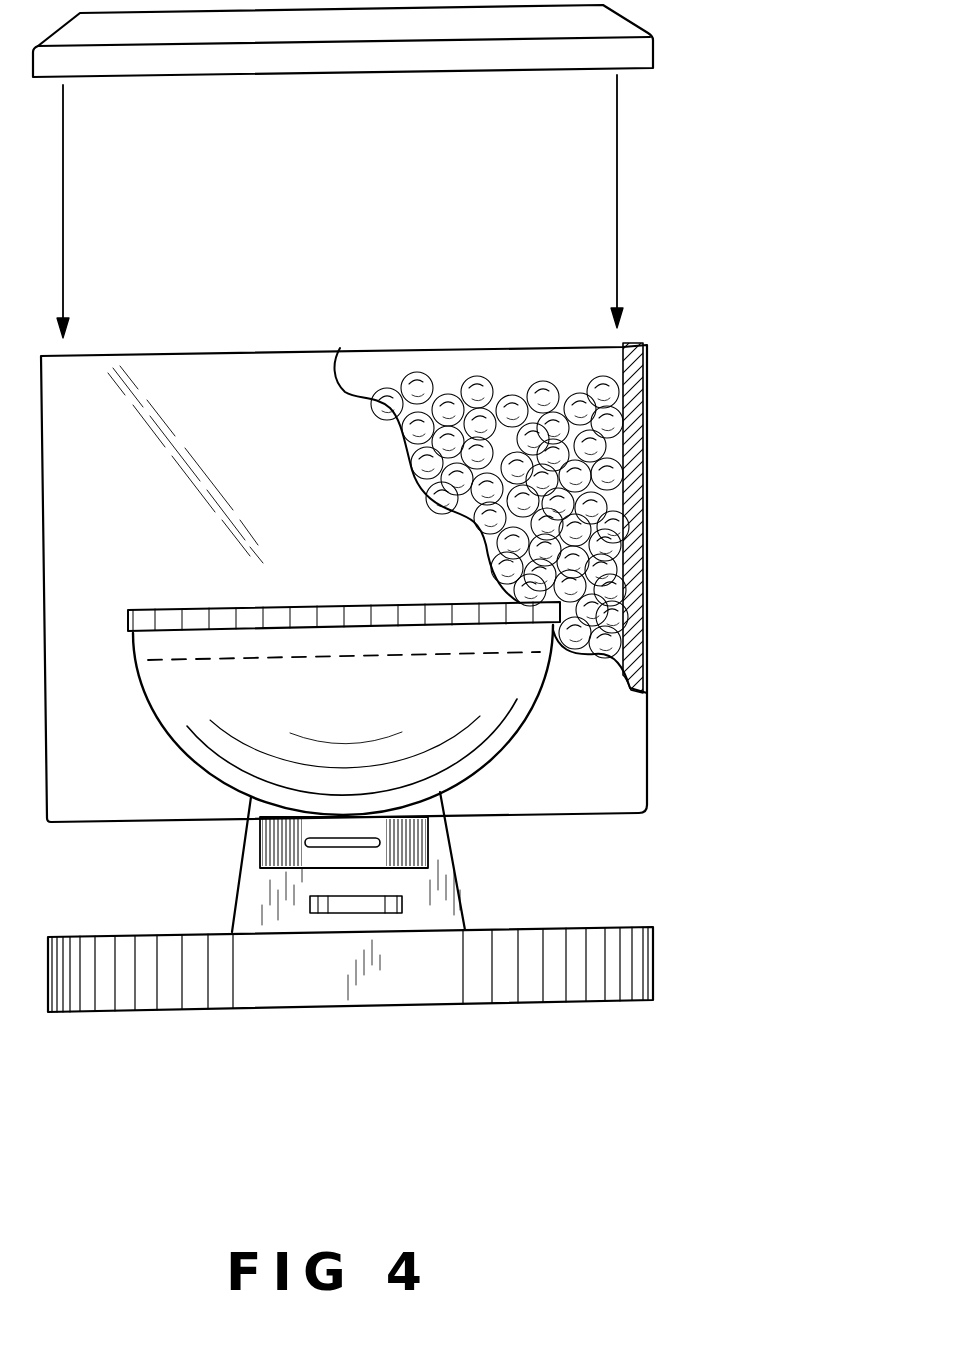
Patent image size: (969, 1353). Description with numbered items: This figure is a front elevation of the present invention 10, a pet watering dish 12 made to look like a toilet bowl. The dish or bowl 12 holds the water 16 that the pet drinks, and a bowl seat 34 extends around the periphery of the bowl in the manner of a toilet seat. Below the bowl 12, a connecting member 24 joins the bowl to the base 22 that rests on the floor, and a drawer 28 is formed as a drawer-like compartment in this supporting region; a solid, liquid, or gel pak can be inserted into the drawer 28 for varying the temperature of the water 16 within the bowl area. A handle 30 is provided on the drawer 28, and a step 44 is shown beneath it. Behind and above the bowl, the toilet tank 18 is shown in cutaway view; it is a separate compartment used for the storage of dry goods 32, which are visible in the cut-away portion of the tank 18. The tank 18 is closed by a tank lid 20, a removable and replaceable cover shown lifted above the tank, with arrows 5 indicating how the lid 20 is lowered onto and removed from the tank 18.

The tank lid 20 is at (627, 50).
The direction arrows 5 is at (322, 212).
The present invention 10 is at (692, 360).
The tank 18 is at (622, 722).
The dry goods 32 is at (615, 473).
The bowl seat 34 is at (282, 605).
The dish or bowl 12 is at (337, 720).
The water 16 is at (183, 703).
The connecting member 24 is at (391, 940).
The drawer 28 is at (397, 902).
The handle 30 is at (313, 845).
The step 44 is at (342, 908).
The base 22 is at (572, 955).